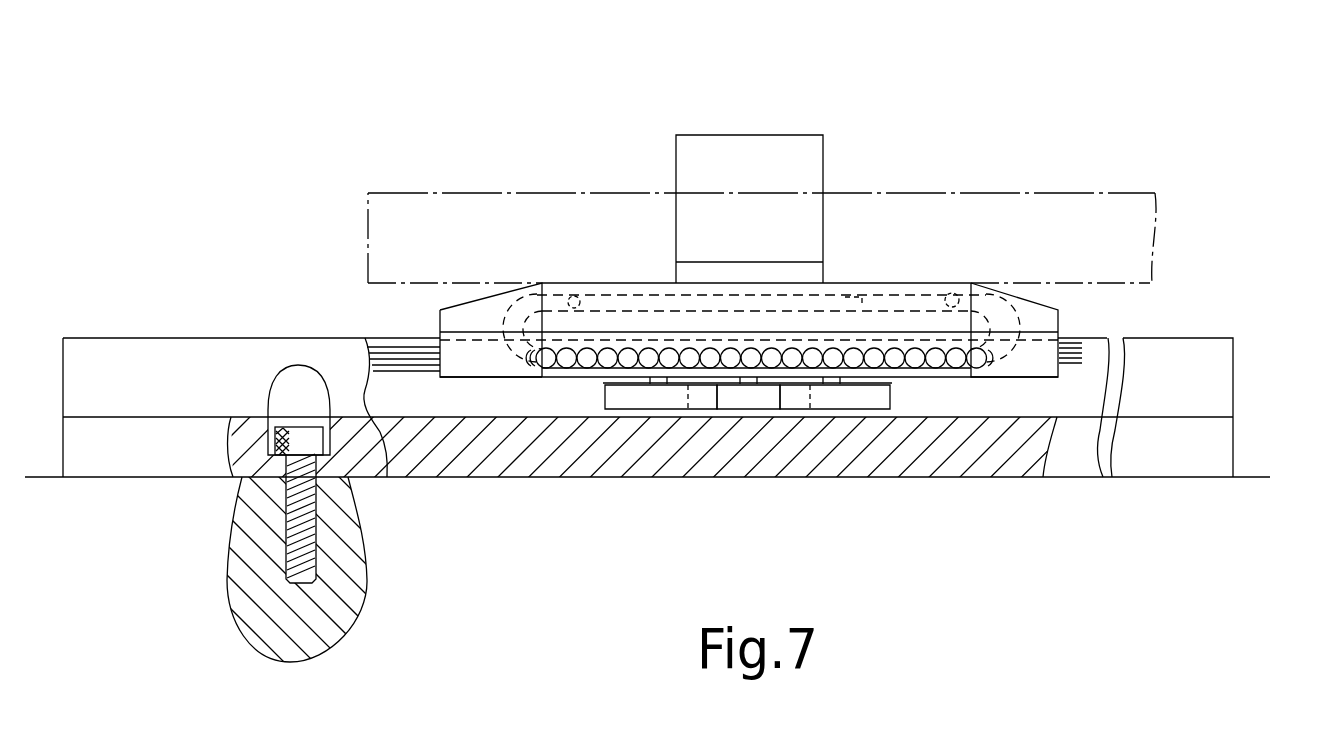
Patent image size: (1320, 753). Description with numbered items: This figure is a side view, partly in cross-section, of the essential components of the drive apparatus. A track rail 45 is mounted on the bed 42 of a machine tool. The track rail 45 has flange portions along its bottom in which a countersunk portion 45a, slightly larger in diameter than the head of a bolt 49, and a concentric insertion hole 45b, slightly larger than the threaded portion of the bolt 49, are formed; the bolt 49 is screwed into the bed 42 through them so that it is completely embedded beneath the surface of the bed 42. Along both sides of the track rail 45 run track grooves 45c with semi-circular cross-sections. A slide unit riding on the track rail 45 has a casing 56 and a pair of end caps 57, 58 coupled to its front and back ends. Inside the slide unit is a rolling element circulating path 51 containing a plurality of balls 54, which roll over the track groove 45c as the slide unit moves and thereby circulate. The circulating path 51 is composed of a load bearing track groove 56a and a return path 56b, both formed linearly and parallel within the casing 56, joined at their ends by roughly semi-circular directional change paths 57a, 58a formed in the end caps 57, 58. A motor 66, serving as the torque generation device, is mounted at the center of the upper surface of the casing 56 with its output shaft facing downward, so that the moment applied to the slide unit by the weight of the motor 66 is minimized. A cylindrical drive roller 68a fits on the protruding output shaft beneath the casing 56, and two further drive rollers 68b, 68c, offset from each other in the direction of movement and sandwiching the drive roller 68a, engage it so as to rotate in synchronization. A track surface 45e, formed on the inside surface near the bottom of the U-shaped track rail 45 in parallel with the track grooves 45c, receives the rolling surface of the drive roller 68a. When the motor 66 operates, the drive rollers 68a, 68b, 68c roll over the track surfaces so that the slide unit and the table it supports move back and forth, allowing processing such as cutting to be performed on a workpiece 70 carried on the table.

The bed 42 is at (1237, 488).
The track rail 45 is at (1237, 369).
The countersunk portion 45a is at (268, 435).
The insertion hole 45b is at (318, 551).
The track groove 45c is at (407, 352).
The track surface 45e is at (1056, 415).
The bolt 49 is at (307, 440).
The rolling element circulating path 51 is at (906, 286).
The ball 54 is at (575, 295).
The casing 56 is at (638, 283).
The load bearing track groove 56a is at (567, 368).
The return path 56b is at (862, 293).
The end cap 57 is at (463, 317).
The directional change path 57a is at (503, 313).
The end cap 58 is at (1034, 310).
The directional change path 58a is at (1020, 296).
The motor 66 is at (703, 131).
The drive roller 68a is at (752, 409).
The drive roller 68b is at (658, 409).
The drive roller 68c is at (855, 409).
The workpiece 70 is at (1125, 222).